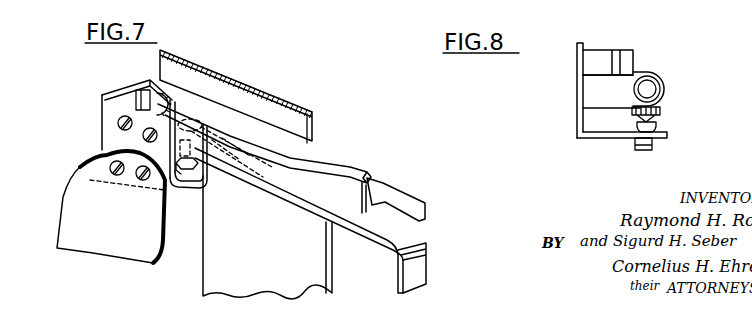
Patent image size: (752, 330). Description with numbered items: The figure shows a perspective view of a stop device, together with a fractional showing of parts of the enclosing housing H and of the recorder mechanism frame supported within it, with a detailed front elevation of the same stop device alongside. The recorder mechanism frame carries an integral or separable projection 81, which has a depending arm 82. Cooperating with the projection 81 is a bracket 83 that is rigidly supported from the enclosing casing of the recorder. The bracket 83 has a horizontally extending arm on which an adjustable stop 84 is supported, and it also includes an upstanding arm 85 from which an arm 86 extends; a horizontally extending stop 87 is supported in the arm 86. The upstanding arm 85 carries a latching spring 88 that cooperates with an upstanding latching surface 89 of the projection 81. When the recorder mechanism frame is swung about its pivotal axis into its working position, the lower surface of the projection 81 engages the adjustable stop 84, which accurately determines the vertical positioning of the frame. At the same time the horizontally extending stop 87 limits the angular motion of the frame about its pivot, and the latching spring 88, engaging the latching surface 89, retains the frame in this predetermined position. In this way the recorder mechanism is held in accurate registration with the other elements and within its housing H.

In FIG. 7, the projection 81 is at (369, 243).
In FIG. 7, the depending arm 82 is at (418, 281).
In FIG. 7, the bracket 83 is at (183, 192).
In FIG. 8, the bracket 83 is at (607, 133).
In FIG. 7, the adjustable stop 84 is at (222, 176).
In FIG. 8, the adjustable stop 84 is at (661, 112).
In FIG. 7, the upstanding arm 85 is at (112, 148).
In FIG. 8, the upstanding arm 85 is at (577, 97).
In FIG. 7, the arm 86 is at (118, 92).
In FIG. 8, the arm 86 is at (652, 73).
In FIG. 7, the horizontally extending stop 87 is at (143, 90).
In FIG. 8, the horizontally extending stop 87 is at (647, 93).
In FIG. 7, the latching spring 88 is at (328, 175).
In FIG. 8, the latching spring 88 is at (612, 50).
In FIG. 7, the latching surface 89 is at (374, 178).
In FIG. 7, the housing H is at (133, 245).